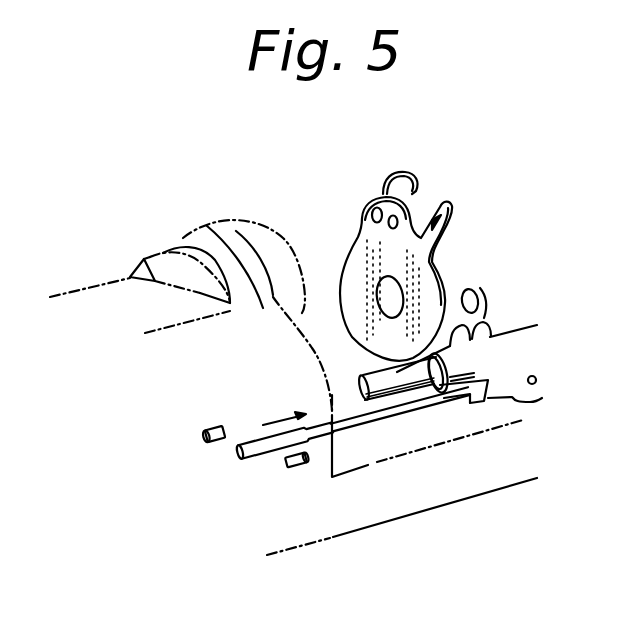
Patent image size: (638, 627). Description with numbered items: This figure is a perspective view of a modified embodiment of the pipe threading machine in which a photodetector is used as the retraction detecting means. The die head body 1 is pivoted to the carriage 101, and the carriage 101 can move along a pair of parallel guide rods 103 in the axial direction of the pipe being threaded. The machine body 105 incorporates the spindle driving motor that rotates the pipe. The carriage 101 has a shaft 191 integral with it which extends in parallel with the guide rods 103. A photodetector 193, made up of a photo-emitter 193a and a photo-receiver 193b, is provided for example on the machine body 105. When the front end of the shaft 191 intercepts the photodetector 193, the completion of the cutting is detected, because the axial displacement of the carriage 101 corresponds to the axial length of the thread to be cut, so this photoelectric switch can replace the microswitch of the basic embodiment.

The die head body 1 is at (440, 204).
The carriage 101 is at (528, 326).
The guide rods 103 is at (432, 395).
The machine body 105 is at (167, 333).
The shaft 191 is at (362, 424).
The photodetector 193 is at (172, 500).
The photo-emitter 193a is at (207, 444).
The photo-receiver 193b is at (293, 467).